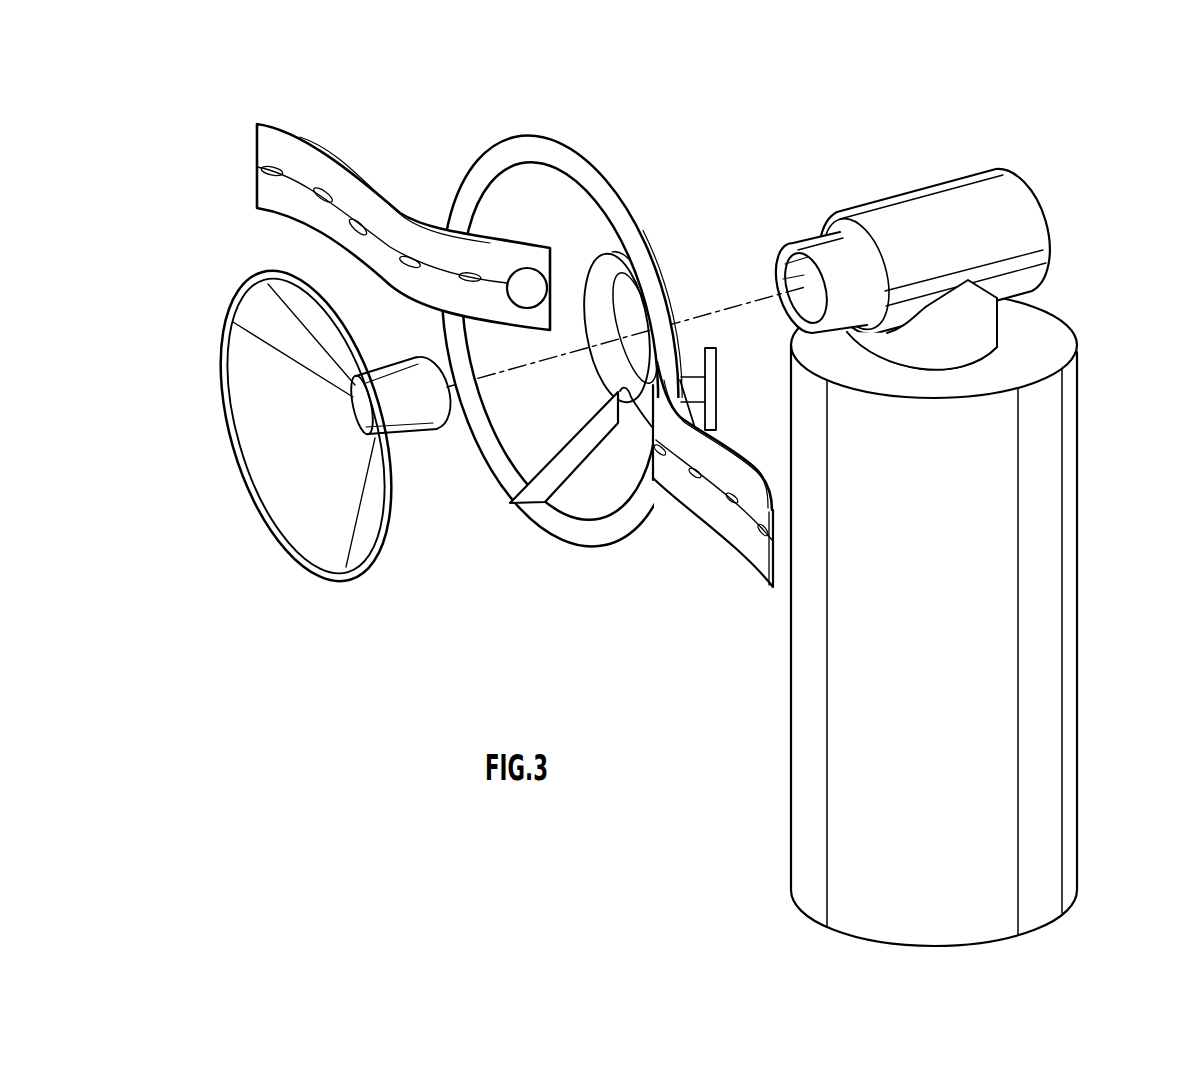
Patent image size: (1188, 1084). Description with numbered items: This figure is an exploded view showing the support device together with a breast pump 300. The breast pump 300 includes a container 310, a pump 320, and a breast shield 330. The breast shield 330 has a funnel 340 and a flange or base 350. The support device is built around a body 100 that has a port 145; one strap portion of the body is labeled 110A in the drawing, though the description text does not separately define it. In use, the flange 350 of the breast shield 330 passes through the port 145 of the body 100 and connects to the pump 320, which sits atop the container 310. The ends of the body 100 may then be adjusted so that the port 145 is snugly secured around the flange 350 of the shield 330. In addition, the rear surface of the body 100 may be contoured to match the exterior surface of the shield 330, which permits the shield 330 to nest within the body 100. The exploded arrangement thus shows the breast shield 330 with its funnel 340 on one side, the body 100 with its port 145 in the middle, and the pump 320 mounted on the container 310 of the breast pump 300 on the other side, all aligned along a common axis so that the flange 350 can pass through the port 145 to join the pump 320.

The body 100 is at (515, 360).
The strap 110A is at (744, 532).
The port 145 is at (631, 292).
The breast pump 300 is at (973, 526).
The container 310 is at (1037, 643).
The pump 320 is at (919, 238).
The breast shield 330 is at (327, 461).
The funnel 340 is at (328, 585).
The flange 350 is at (404, 413).